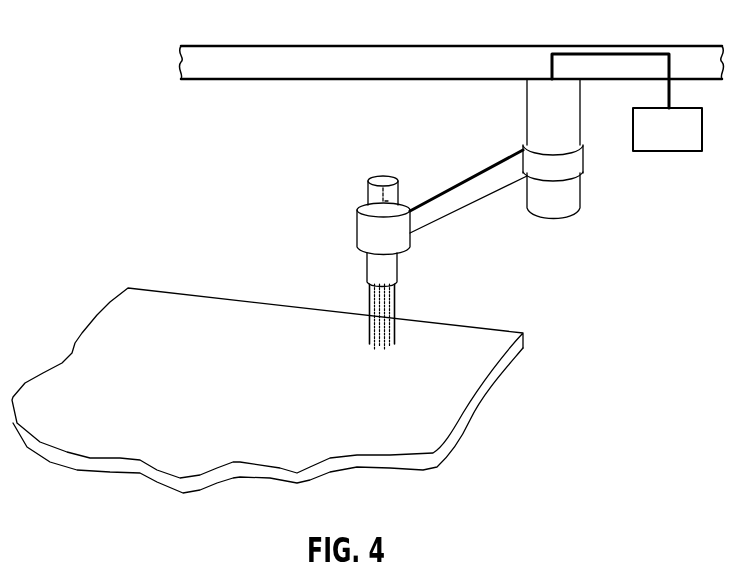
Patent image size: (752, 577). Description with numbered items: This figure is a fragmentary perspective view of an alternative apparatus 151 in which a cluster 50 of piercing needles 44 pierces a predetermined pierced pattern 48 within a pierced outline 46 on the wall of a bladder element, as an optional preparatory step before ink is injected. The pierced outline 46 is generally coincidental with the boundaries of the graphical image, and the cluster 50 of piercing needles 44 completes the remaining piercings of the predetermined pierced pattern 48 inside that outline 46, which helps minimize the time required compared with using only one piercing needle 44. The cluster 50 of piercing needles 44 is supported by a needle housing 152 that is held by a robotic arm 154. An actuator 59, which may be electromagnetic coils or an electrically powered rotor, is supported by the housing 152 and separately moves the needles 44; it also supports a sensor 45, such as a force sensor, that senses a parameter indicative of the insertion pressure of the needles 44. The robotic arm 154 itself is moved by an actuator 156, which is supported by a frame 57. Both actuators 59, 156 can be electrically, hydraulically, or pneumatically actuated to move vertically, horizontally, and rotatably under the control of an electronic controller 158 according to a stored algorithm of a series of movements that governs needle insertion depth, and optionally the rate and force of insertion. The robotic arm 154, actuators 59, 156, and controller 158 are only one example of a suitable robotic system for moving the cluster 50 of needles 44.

The piercing needle 44 is at (400, 307).
The sensor 45 is at (383, 186).
The pierced outline 46 is at (150, 345).
The predetermined pierced pattern 48 is at (250, 321).
The cluster of piercing needles 50 is at (367, 331).
The frame 57 is at (215, 57).
The actuator 59 is at (370, 192).
The alternative apparatus 151 is at (603, 262).
The needle housing 152 is at (392, 267).
The robotic arm 154 is at (482, 173).
The actuator 156 is at (527, 90).
The electronic controller 158 is at (670, 151).